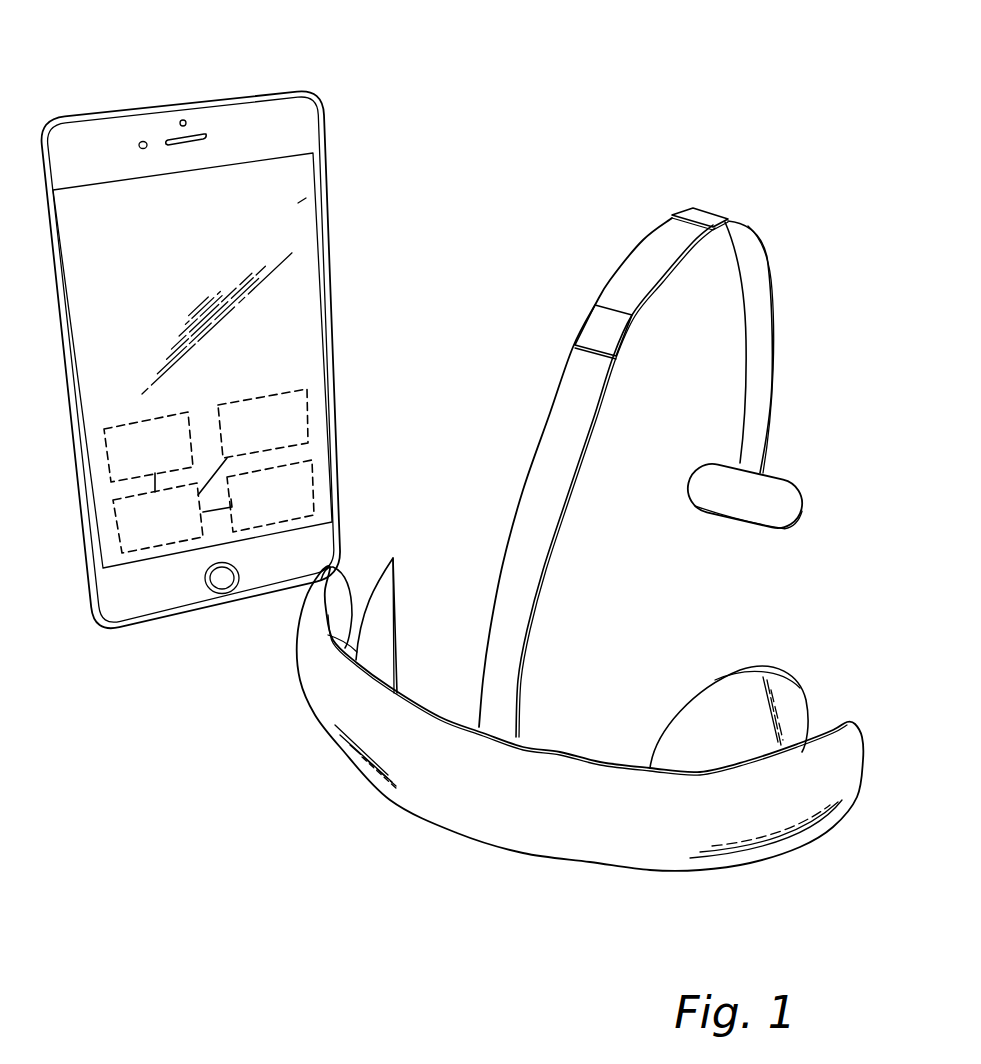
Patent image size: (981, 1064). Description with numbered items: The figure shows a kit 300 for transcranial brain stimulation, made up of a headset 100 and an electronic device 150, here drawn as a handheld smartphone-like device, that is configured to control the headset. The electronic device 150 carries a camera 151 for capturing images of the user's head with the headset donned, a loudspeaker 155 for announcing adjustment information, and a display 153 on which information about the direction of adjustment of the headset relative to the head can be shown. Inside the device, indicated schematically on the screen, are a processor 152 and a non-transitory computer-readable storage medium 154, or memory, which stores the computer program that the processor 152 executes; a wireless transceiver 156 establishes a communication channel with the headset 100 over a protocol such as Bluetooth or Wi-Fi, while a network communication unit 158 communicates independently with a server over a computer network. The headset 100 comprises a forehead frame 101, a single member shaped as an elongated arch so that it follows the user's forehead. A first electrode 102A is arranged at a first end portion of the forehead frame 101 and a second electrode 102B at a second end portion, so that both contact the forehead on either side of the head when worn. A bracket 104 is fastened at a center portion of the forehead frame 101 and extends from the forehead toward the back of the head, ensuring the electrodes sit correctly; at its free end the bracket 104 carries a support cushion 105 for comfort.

The kit 300 is at (499, 108).
The electronic device 150 is at (191, 359).
The camera 151 is at (140, 142).
The loudspeaker 155 is at (201, 136).
The display 153 is at (298, 203).
The network communication unit 158 is at (148, 447).
The wireless transceiver 156 is at (263, 423).
The processor 152 is at (172, 505).
The non-transitory computer-readable storage medium 154 is at (270, 496).
The headset 100 is at (652, 248).
The forehead frame 101 is at (580, 718).
The first electrode 102A is at (792, 693).
The second electrode 102B is at (383, 583).
The bracket 104 is at (542, 507).
The support cushion 105 is at (784, 506).